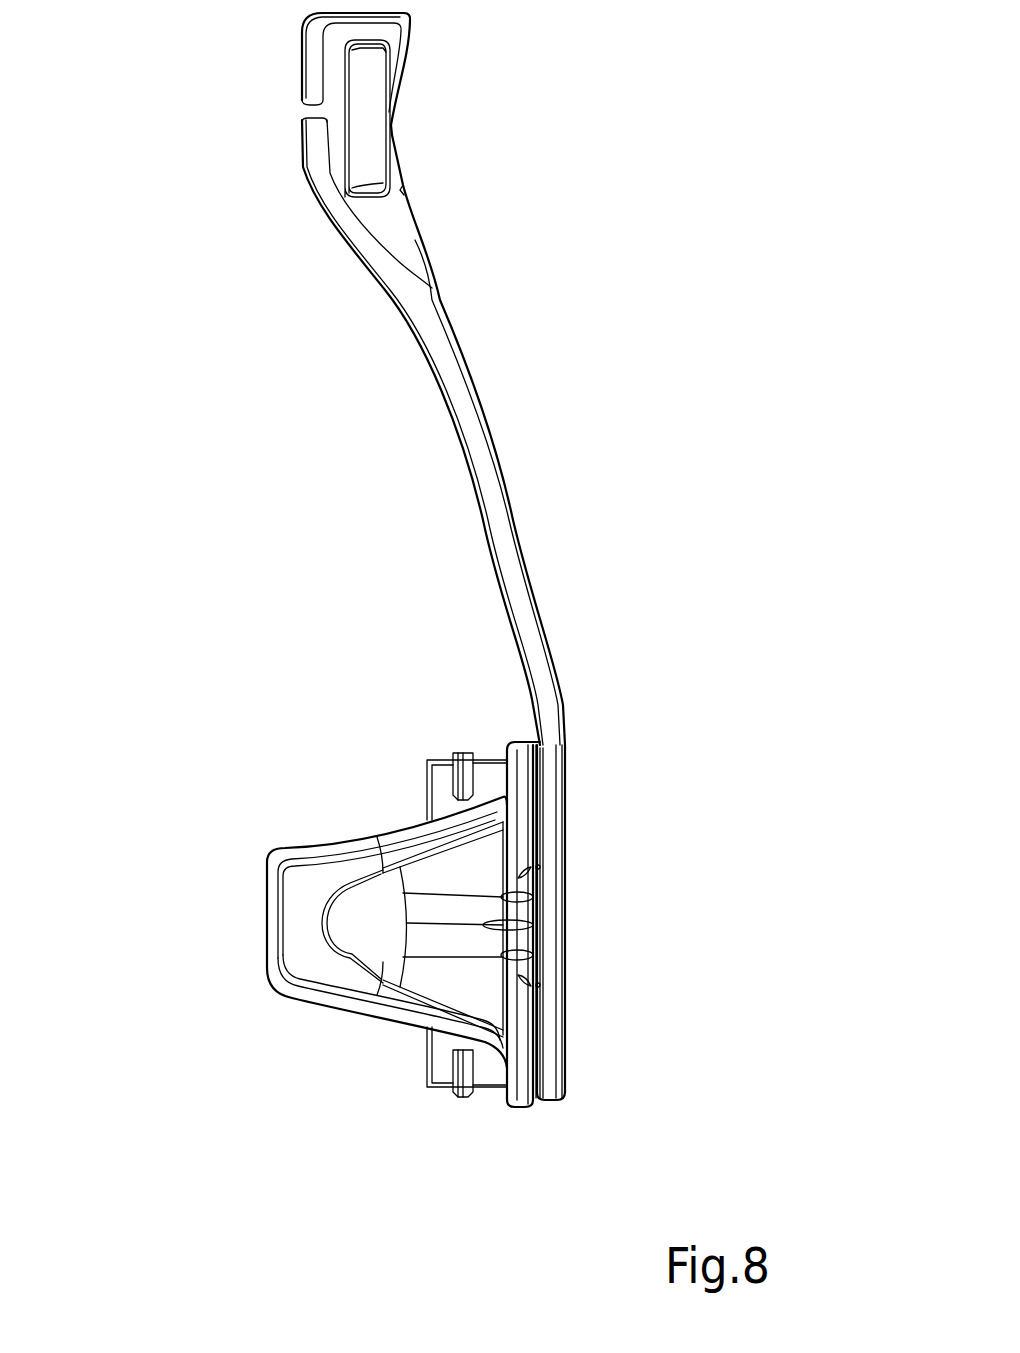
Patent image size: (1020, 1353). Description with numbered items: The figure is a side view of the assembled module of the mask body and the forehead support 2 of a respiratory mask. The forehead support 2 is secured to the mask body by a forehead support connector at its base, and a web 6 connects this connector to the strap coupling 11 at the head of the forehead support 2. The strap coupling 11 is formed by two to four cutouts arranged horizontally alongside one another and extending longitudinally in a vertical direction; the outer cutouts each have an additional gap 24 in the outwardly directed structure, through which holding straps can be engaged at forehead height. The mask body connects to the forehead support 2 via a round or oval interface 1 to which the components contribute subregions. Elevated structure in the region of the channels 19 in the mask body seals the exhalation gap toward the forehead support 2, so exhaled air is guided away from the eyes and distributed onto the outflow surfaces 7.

The interface 1 is at (340, 840).
The forehead support 2 is at (535, 520).
The web 6 is at (470, 442).
The outflow surfaces 7 is at (542, 1027).
The strap coupling 11 is at (383, 143).
The channels 19 is at (533, 746).
The gap 24 is at (318, 110).